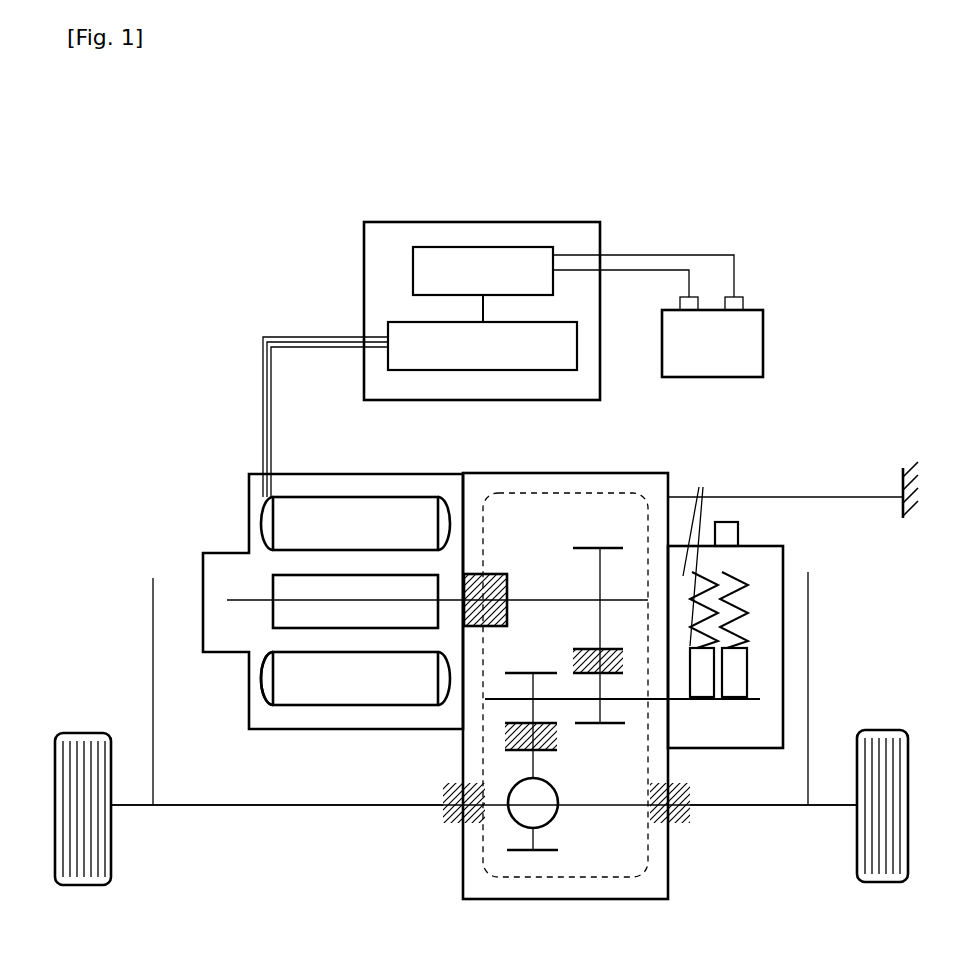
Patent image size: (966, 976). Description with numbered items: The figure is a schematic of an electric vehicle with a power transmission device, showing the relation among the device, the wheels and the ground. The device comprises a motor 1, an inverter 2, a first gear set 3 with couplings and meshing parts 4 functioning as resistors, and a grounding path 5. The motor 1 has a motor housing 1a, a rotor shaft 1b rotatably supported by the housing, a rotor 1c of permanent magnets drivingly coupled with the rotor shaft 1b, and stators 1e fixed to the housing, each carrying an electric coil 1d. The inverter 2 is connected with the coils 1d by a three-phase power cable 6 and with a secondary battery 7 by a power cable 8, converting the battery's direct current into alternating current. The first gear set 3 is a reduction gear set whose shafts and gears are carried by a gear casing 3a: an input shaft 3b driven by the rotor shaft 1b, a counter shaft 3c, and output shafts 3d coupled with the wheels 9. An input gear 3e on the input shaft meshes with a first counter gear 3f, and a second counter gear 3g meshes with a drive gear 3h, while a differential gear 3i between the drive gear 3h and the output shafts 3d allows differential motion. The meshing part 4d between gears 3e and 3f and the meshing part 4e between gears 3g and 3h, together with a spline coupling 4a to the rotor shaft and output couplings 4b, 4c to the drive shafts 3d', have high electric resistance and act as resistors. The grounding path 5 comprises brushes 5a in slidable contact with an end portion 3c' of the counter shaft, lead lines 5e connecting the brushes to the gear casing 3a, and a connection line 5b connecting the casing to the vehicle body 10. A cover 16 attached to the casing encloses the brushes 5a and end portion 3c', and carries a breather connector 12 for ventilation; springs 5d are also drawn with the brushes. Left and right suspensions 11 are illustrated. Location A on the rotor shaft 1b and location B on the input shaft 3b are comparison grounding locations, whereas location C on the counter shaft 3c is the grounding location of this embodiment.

The motor 1 is at (350, 598).
The motor housing 1a is at (312, 473).
The rotor shaft 1b is at (275, 598).
The rotor 1c is at (316, 630).
The electric coil 1d is at (263, 692).
The stator 1e is at (370, 706).
The inverter 2 is at (572, 218).
The first gear set 3 is at (484, 668).
The gear casing 3a is at (502, 473).
The input shaft 3b is at (549, 598).
The counter shaft 3c is at (622, 738).
The end portion 3c' is at (714, 721).
The output shaft 3d is at (484, 871).
The drive shaft 3d' is at (484, 831).
The input gear 3e is at (597, 547).
The first counter gear 3f is at (610, 725).
The second counter gear 3g is at (525, 672).
The drive gear 3h is at (550, 851).
The differential gear 3i is at (559, 805).
The couplings and meshing parts 4 is at (566, 692).
The spline coupling 4a is at (485, 598).
The output coupling 4b is at (452, 822).
The output coupling 4c is at (688, 822).
The meshing part 4d is at (580, 660).
The meshing part 4e is at (512, 725).
The grounding path 5 is at (785, 595).
The brush 5a is at (728, 672).
The connection line 5b is at (866, 499).
The springs 5d is at (730, 605).
The lead line 5e is at (698, 554).
The three-phase power cable 6 is at (309, 333).
The secondary battery 7 is at (767, 345).
The power cable 8 is at (636, 251).
The wheel 9 is at (92, 732).
The body 10 is at (903, 486).
The suspension 11 is at (152, 600).
The breather connector 12 is at (739, 533).
The cover 16 is at (784, 566).
The location A is at (226, 614).
The location B is at (623, 596).
The location C is at (687, 706).